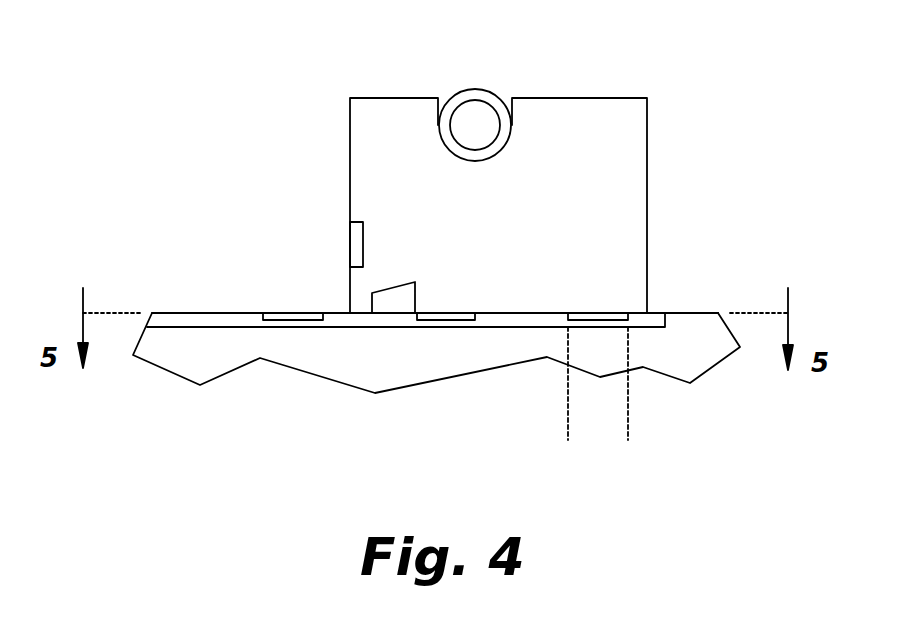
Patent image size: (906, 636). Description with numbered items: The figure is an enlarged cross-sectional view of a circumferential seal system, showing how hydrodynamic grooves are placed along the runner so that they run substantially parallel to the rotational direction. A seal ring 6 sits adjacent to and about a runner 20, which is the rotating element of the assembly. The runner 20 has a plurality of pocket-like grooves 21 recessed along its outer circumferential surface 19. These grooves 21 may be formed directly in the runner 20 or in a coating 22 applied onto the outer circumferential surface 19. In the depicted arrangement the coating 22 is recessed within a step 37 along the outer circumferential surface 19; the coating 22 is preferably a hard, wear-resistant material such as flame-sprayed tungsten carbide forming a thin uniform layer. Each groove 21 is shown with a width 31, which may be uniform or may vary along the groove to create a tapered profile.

The seal ring 6 is at (548, 97).
The coating 22 is at (223, 313).
The step 37 is at (195, 327).
The grooves 21 is at (566, 318).
The runner 20 is at (677, 313).
The outer circumferential surface 19 is at (703, 313).
The width 31 is at (683, 425).